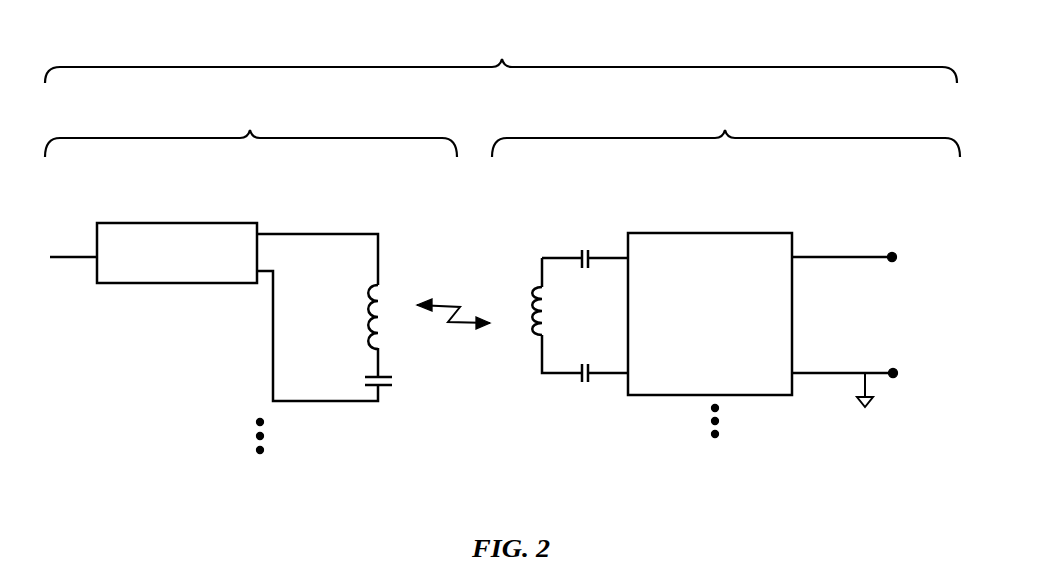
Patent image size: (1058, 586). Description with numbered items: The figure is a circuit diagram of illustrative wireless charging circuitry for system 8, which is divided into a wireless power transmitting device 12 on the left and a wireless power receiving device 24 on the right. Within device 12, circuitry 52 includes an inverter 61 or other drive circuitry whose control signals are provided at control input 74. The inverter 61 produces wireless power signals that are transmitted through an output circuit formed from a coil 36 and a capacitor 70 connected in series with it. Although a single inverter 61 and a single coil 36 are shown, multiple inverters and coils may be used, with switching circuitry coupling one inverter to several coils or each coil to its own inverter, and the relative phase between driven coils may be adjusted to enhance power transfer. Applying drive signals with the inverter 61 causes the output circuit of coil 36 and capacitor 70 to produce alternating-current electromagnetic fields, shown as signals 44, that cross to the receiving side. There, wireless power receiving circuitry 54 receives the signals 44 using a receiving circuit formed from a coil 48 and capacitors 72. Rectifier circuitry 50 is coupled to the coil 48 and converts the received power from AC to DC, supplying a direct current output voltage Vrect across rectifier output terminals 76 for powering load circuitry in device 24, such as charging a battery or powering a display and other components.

The system 8 is at (501, 57).
The device 12 is at (251, 130).
The device 24 is at (726, 132).
The inverter 61 is at (177, 223).
The control input 74 is at (68, 253).
The coil 36 is at (390, 278).
The capacitor 70 is at (400, 384).
The circuitry 52 is at (218, 394).
The signals 44 is at (462, 323).
The coil 48 is at (530, 345).
The capacitor 72 is at (590, 231).
The rectifier circuitry 50 is at (705, 233).
The wireless power receiving circuitry 54 is at (666, 440).
The rectifier output terminals 76 is at (897, 261).